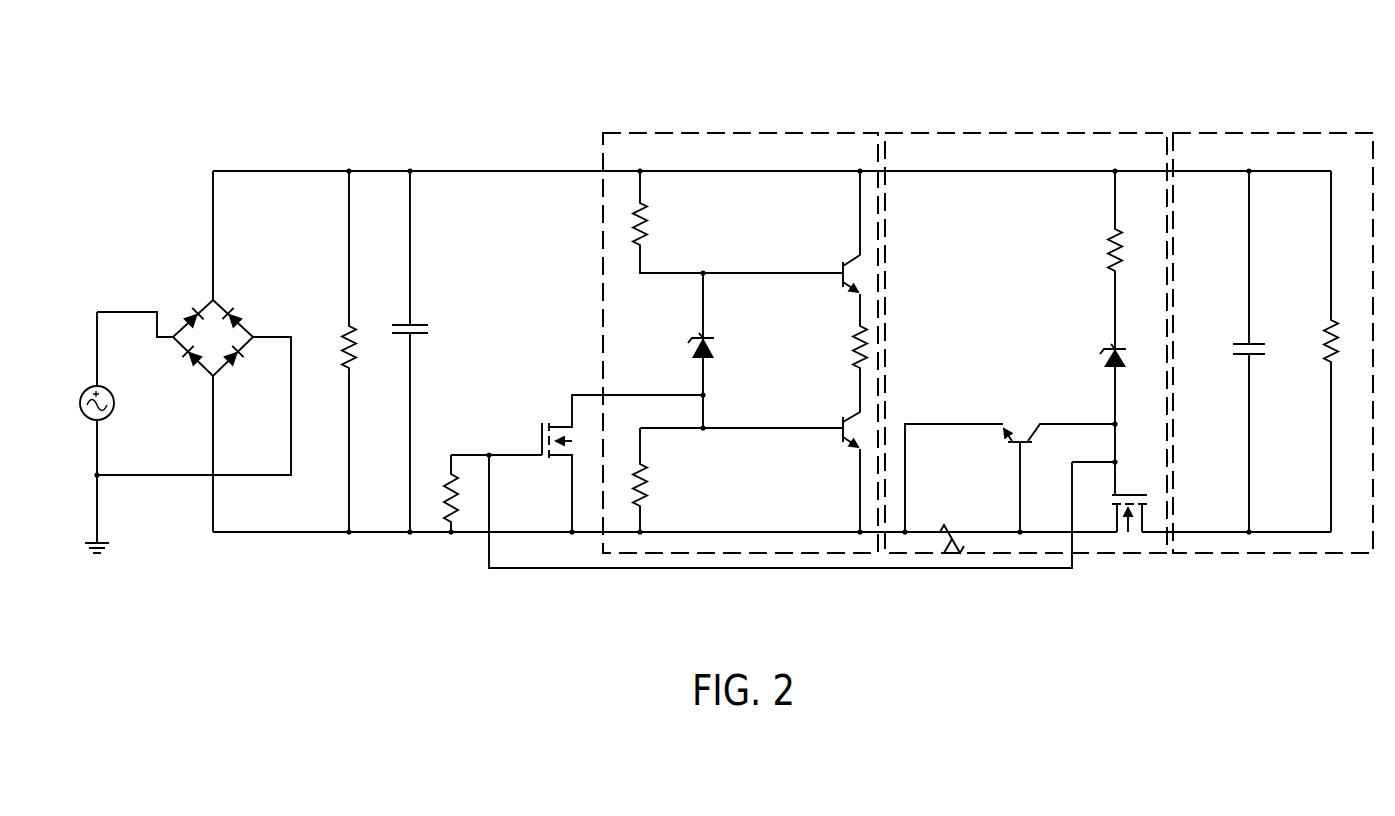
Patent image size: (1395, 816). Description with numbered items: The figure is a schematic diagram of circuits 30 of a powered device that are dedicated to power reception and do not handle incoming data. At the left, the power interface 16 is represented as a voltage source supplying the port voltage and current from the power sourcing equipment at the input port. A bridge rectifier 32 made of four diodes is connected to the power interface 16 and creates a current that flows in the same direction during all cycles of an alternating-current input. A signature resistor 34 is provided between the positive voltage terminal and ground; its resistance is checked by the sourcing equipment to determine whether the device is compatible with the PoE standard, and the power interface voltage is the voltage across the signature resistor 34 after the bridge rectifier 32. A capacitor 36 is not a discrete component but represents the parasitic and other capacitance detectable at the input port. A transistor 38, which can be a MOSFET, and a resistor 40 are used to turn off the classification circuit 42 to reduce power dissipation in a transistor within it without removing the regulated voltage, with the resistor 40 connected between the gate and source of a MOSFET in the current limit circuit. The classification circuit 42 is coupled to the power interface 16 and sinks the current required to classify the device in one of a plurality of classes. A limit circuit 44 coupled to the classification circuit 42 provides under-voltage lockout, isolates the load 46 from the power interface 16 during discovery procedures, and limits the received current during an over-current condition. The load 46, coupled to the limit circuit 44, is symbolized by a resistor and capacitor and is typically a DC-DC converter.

The power interface 16 is at (76, 387).
The circuits 30 is at (241, 97).
The bridge rectifier 32 is at (184, 294).
The signature resistor 34 is at (332, 344).
The capacitor 36 is at (444, 324).
The transistor 38 is at (545, 407).
The resistor 40 is at (429, 480).
The classification circuit 42 is at (761, 118).
The limit circuit 44 is at (1028, 118).
The load 46 is at (1250, 118).